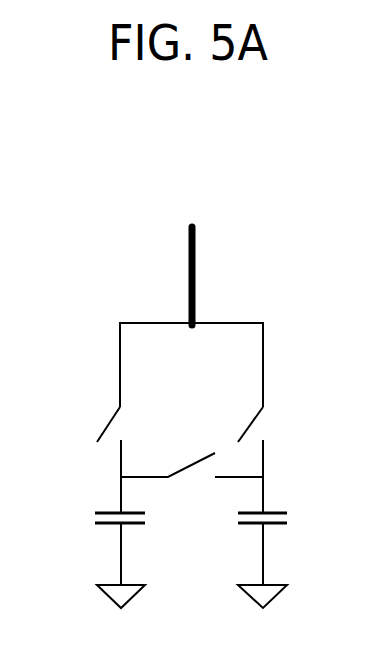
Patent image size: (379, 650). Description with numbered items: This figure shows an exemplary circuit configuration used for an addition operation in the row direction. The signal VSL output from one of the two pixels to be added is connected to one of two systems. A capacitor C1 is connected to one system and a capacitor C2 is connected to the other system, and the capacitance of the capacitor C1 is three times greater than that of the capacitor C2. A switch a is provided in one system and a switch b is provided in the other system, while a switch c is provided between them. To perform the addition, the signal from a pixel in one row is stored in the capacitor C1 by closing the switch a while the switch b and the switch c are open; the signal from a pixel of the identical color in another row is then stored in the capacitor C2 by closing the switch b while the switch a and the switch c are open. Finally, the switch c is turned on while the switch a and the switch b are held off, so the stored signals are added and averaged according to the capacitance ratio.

The signal VSL is at (191, 292).
The switch a is at (91, 458).
The switch b is at (268, 459).
The switch c is at (192, 482).
The capacitor C1 is at (94, 556).
The capacitor C2 is at (290, 556).